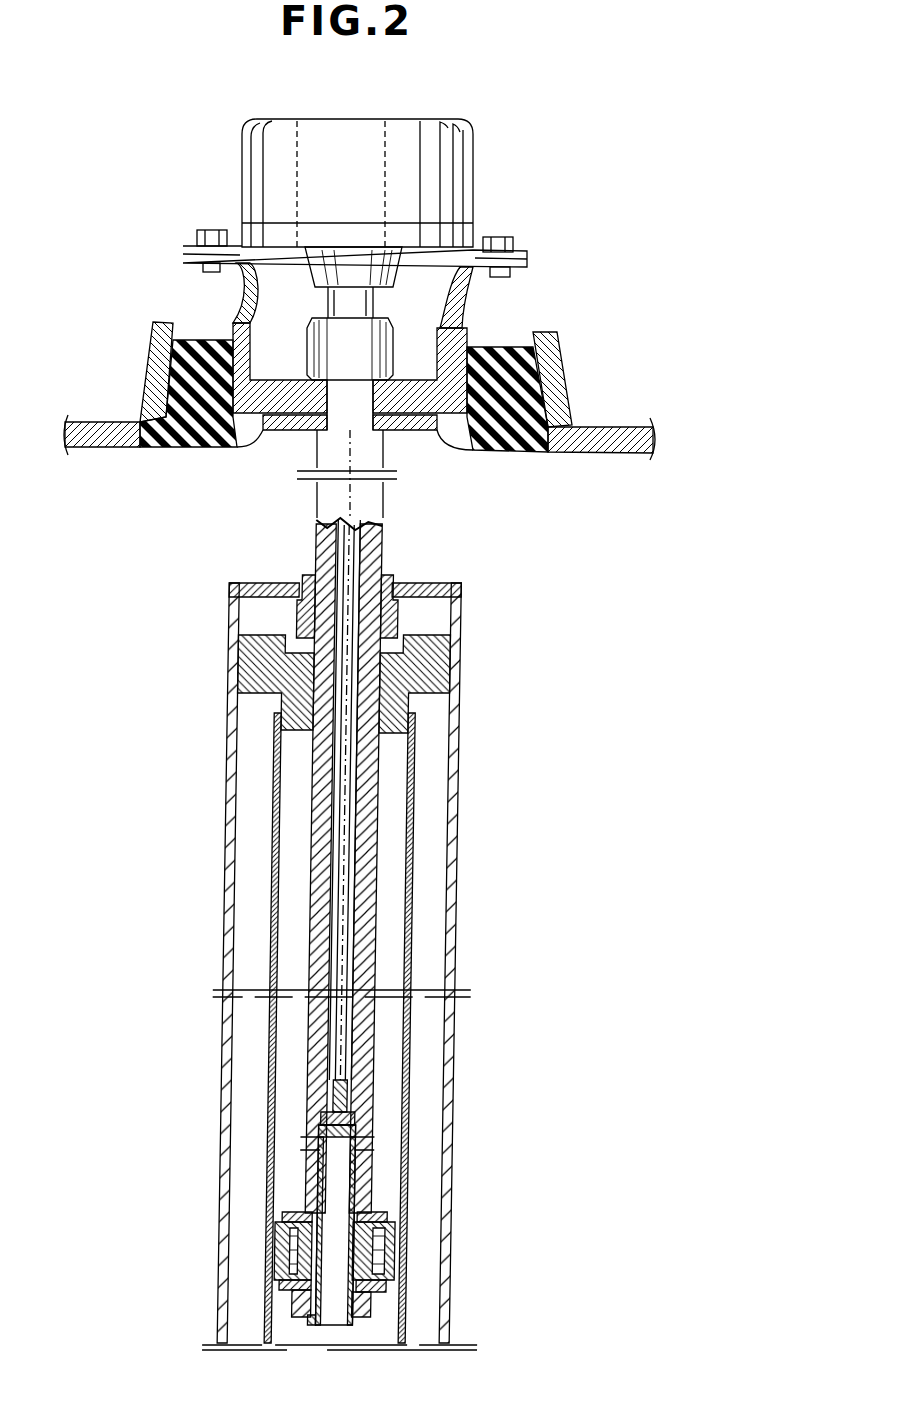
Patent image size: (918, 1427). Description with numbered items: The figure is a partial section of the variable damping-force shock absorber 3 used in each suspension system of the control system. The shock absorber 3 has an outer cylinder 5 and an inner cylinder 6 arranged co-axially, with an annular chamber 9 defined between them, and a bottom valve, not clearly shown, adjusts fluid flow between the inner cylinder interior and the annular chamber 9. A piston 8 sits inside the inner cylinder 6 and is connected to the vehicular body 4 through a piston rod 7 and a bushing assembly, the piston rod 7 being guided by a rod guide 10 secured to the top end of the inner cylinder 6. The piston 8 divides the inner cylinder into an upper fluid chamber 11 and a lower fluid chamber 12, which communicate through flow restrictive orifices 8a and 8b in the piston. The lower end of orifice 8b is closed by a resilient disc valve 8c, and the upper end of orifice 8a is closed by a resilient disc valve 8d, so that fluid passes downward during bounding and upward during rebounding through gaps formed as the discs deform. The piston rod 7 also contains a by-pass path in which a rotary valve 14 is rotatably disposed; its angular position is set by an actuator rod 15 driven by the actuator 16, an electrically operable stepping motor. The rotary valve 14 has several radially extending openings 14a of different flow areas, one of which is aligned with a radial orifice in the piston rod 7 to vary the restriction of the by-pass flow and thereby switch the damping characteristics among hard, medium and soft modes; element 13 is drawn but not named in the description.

The variable damping-force shock absorber 3 is at (226, 673).
The vehicular body 4 is at (606, 432).
The outer cylinder 5 is at (460, 717).
The inner cylinder 6 is at (413, 822).
The piston rod 7 is at (362, 888).
The piston 8 is at (326, 1235).
The flow restrictive orifice 8a is at (377, 1250).
The flow restrictive orifice 8b is at (290, 1257).
The resilient disc valve 8c is at (297, 1287).
The resilient disc valve 8d is at (293, 1215).
The annular chamber 9 is at (252, 1103).
The rod guide 10 is at (427, 660).
The upper fluid chamber 11 is at (387, 968).
The lower fluid chamber 12 is at (380, 1332).
The coupling 13 is at (338, 1197).
The rotary valve 14 is at (352, 1127).
The radially extending openings 14a is at (365, 1145).
The actuator rod 15 is at (340, 918).
The actuator 16 is at (473, 158).